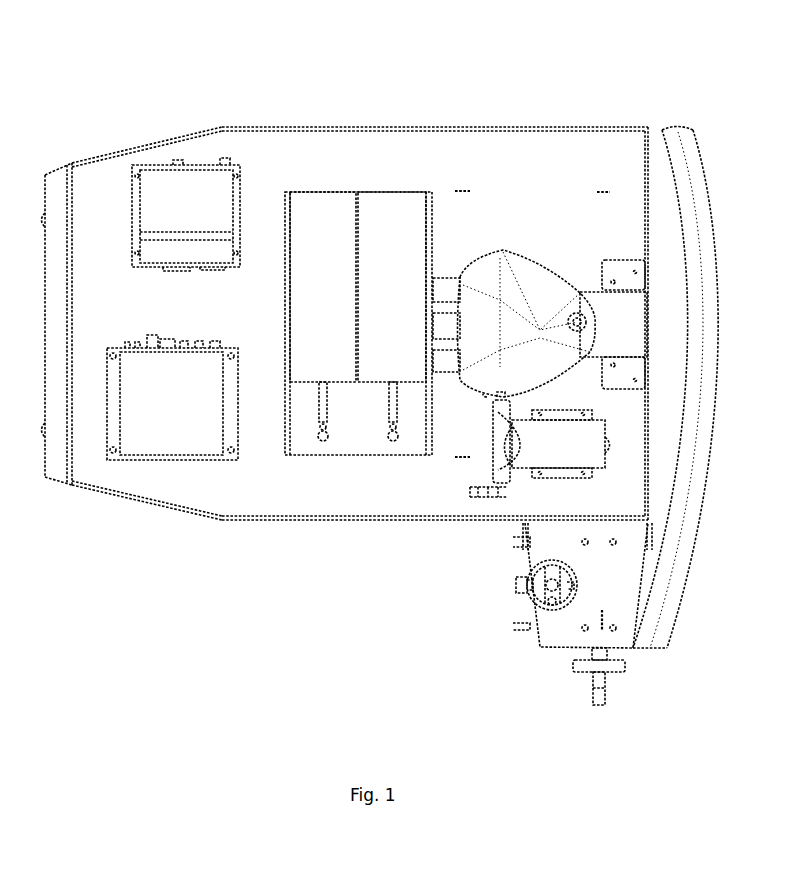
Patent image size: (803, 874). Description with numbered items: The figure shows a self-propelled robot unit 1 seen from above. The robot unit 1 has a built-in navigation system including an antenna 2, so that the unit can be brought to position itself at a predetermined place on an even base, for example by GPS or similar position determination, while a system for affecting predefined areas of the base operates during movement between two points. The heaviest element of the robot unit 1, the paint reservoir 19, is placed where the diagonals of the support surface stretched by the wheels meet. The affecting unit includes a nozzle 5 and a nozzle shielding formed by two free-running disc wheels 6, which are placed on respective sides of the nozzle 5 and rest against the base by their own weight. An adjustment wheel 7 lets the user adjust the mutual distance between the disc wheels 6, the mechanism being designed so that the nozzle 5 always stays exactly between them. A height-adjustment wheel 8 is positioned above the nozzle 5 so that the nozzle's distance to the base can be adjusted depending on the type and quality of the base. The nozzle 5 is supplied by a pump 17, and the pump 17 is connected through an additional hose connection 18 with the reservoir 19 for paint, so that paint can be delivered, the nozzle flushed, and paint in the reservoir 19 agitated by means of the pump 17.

The self-propelled robot unit 1 is at (117, 80).
The antenna 2 is at (578, 292).
The nozzle 5 is at (518, 590).
The disc wheels 6 is at (522, 627).
The adjustment wheel 7 is at (622, 673).
The height-adjustment wheel 8 is at (574, 580).
The pump 17 is at (558, 447).
The hose connection 18 is at (392, 442).
The reservoir 19 is at (338, 193).